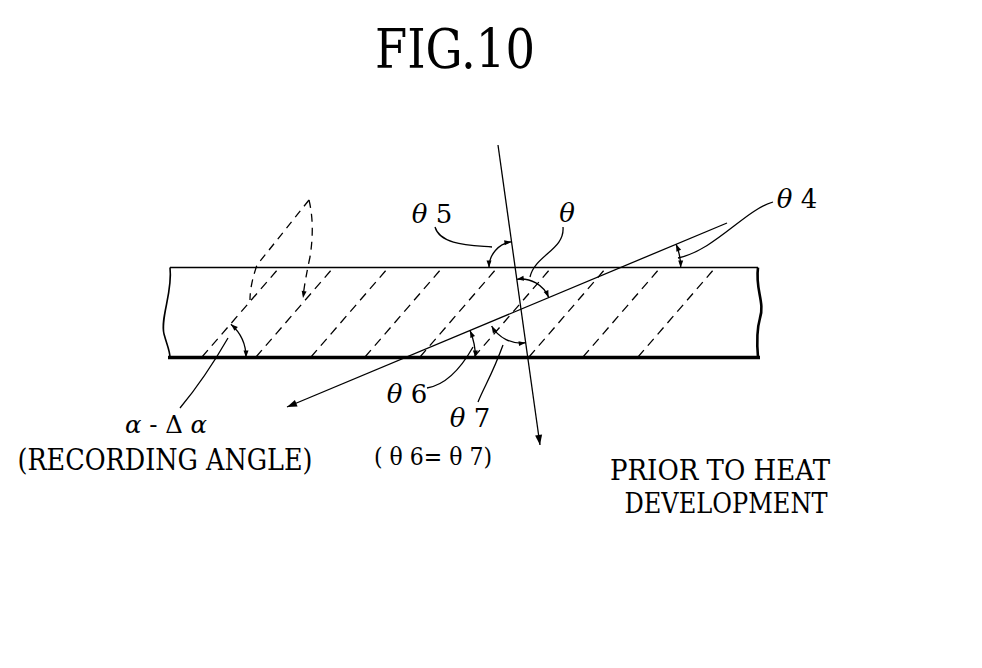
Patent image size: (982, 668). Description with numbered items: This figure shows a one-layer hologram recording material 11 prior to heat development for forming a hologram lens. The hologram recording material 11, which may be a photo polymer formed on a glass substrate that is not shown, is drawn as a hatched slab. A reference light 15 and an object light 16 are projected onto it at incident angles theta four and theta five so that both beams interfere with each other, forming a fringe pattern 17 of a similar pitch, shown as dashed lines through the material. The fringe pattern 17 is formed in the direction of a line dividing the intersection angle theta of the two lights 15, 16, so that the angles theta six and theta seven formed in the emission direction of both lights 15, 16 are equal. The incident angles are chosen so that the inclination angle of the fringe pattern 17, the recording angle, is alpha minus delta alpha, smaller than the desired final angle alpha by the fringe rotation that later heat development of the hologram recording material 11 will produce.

The hologram recording material 11 is at (738, 282).
The reference light 15 is at (702, 230).
The object light 16 is at (508, 198).
The fringe pattern 17 is at (290, 230).